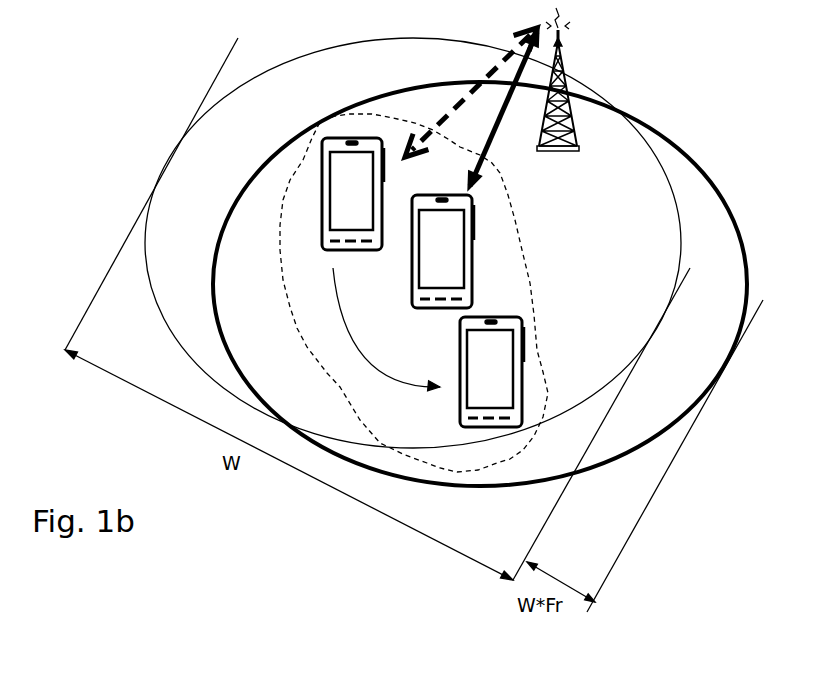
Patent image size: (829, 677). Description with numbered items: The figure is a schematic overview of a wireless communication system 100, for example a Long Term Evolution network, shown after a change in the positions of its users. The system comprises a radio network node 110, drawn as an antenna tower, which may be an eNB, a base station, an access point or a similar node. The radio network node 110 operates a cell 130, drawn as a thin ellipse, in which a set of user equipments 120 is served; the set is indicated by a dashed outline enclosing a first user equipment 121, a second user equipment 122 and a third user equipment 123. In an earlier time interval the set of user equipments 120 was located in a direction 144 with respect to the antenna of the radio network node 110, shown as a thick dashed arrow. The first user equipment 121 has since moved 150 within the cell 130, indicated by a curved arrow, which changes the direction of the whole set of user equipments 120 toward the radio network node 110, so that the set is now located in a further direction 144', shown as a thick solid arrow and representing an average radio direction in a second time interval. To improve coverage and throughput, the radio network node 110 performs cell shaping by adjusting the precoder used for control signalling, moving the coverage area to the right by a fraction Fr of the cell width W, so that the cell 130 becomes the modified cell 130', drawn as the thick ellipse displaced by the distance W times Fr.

The wireless communication system 100 is at (140, 105).
The radio network node 110 is at (586, 82).
The set of user equipments 120 is at (525, 252).
The first user equipment 121 is at (540, 30).
The second user equipment 122 is at (533, 30).
The third user equipment 123 is at (535, 30).
The cell 130 is at (413, 243).
The cell 130' is at (480, 284).
The direction 144 is at (471, 92).
The further direction 144' is at (503, 109).
The moved 150 is at (386, 329).